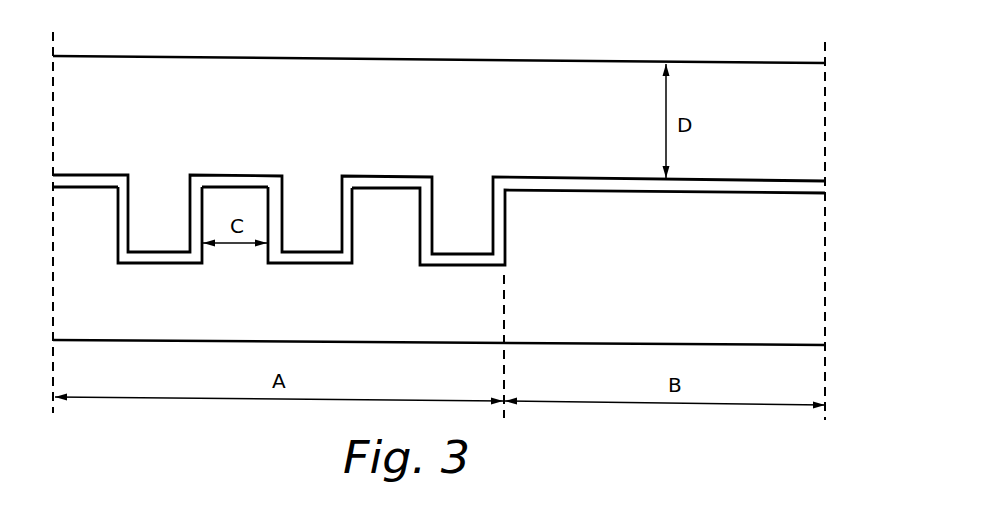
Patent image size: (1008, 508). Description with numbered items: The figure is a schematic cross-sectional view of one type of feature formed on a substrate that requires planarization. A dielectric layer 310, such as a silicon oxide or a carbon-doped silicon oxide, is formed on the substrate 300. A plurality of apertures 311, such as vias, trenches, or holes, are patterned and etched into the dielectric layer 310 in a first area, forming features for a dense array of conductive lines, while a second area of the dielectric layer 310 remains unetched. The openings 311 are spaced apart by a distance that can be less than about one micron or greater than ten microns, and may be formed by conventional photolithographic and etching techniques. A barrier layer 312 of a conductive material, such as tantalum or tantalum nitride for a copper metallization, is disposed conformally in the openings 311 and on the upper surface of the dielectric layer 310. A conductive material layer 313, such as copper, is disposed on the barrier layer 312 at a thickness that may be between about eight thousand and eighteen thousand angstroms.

The substrate 300 is at (738, 30).
The dielectric layer 310 is at (807, 269).
The apertures 311 is at (177, 217).
The barrier layer 312 is at (382, 176).
The conductive material layer 313 is at (465, 98).